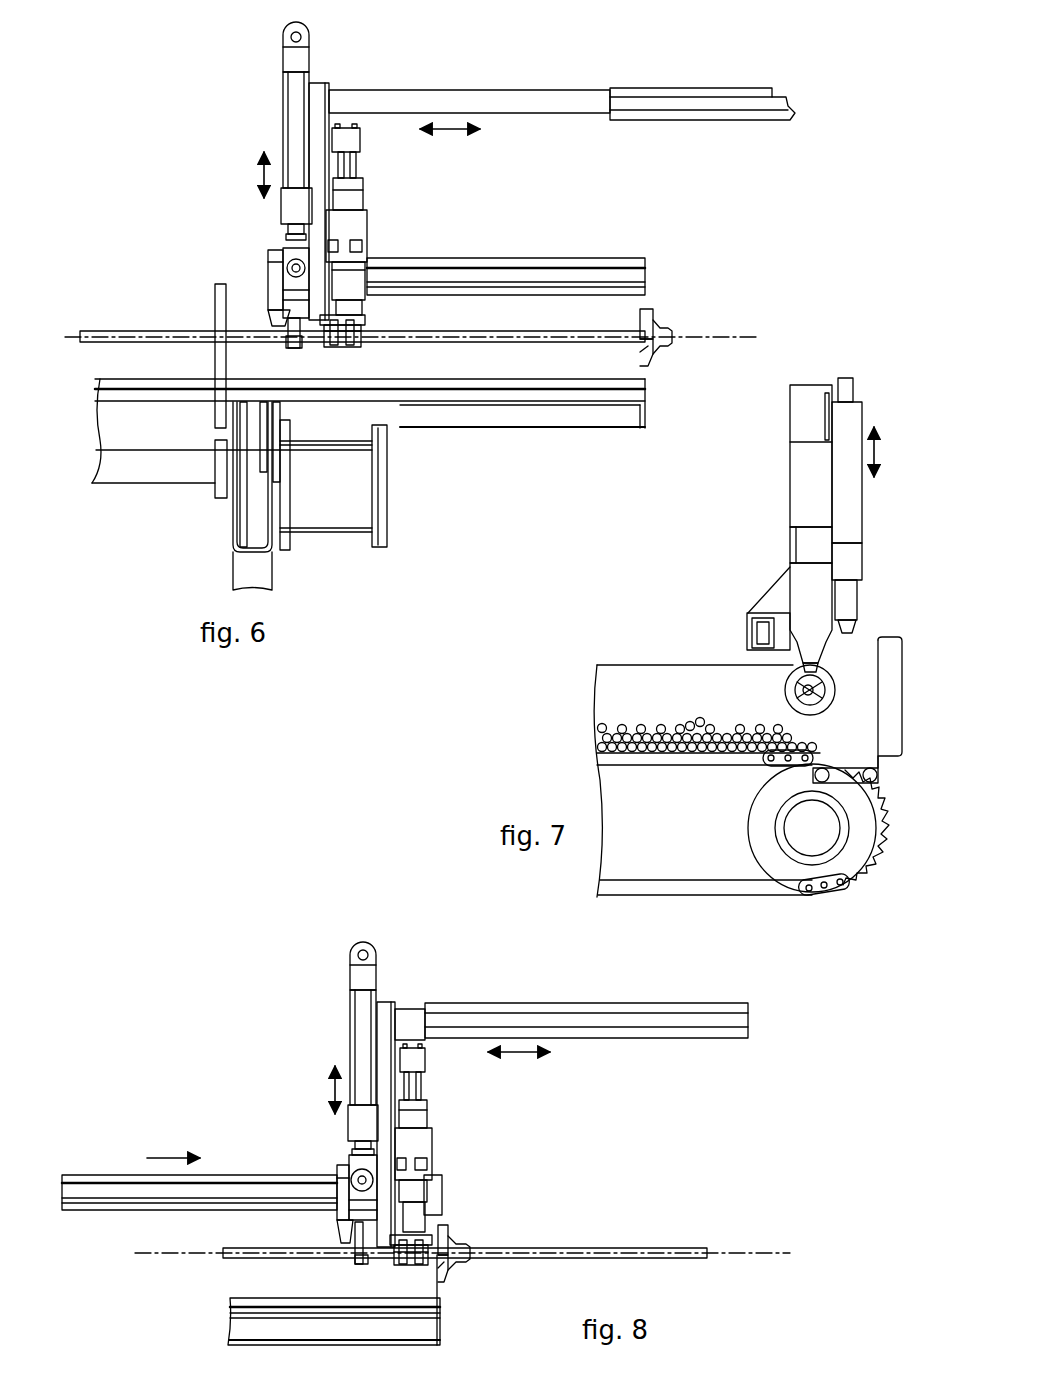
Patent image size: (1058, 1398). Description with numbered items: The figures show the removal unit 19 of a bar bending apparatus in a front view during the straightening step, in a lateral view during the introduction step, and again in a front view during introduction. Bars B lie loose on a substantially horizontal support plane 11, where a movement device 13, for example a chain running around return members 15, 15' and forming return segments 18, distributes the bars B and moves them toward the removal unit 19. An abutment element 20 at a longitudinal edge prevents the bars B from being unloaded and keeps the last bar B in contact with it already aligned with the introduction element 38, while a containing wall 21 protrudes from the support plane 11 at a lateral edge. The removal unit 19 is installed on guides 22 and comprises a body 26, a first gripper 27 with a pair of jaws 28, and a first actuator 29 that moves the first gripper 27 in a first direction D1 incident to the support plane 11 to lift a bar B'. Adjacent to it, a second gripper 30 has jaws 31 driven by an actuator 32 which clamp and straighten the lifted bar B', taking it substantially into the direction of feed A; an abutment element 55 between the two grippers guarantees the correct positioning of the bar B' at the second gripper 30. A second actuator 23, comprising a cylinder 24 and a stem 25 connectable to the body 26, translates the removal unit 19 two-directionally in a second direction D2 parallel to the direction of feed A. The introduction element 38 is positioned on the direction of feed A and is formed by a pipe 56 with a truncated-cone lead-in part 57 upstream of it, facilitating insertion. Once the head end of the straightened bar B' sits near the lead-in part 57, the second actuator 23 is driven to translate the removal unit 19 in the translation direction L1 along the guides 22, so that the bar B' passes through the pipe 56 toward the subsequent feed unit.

In FIG. 6, the support plane 11 is at (156, 416).
In FIG. 6, the movement device 13 is at (280, 535).
In FIG. 6, the return member 15 is at (227, 479).
In FIG. 7, the return member 15' is at (838, 828).
In FIG. 7, the return segment 18 is at (620, 765).
In FIG. 6, the removal unit 19 is at (276, 62).
In FIG. 7, the removal unit 19 is at (878, 418).
In FIG. 8, the removal unit 19 is at (347, 931).
In FIG. 6, the abutment element 20 is at (220, 292).
In FIG. 7, the abutment element 20 is at (890, 720).
In FIG. 6, the containing wall 21 is at (645, 418).
In FIG. 8, the containing wall 21 is at (441, 1330).
In FIG. 6, the guides 22 is at (553, 275).
In FIG. 8, the guides 22 is at (264, 1182).
In FIG. 6, the second actuator 23 is at (605, 70).
In FIG. 8, the second actuator 23 is at (494, 1000).
In FIG. 6, the cylinder 24 is at (710, 103).
In FIG. 8, the cylinder 24 is at (677, 1020).
In FIG. 6, the stem 25 is at (385, 102).
In FIG. 8, the stem 25 is at (411, 1020).
In FIG. 6, the body 26 is at (318, 93).
In FIG. 8, the body 26 is at (385, 1010).
In FIG. 6, the first gripper 27 is at (262, 283).
In FIG. 7, the first gripper 27 is at (830, 662).
In FIG. 8, the first gripper 27 is at (335, 1218).
In FIG. 6, the jaws 28 is at (275, 318).
In FIG. 7, the jaws 28 is at (803, 658).
In FIG. 8, the jaws 28 is at (346, 1236).
In FIG. 6, the first actuator 29 is at (297, 136).
In FIG. 7, the first actuator 29 is at (843, 482).
In FIG. 8, the first actuator 29 is at (362, 1052).
In FIG. 6, the second gripper 30 is at (376, 346).
In FIG. 7, the second gripper 30 is at (774, 679).
In FIG. 8, the second gripper 30 is at (389, 1272).
In FIG. 6, the jaws 31 is at (348, 323).
In FIG. 7, the jaws 31 is at (800, 690).
In FIG. 8, the jaws 31 is at (428, 1265).
In FIG. 6, the actuator 32 is at (347, 140).
In FIG. 8, the actuator 32 is at (410, 1055).
In FIG. 6, the introduction element 38 is at (672, 318).
In FIG. 7, the introduction element 38 is at (876, 779).
In FIG. 8, the introduction element 38 is at (471, 1246).
In FIG. 6, the abutment element 55 is at (295, 346).
In FIG. 8, the abutment element 55 is at (361, 1266).
In FIG. 6, the pipe 56 is at (662, 350).
In FIG. 7, the pipe 56 is at (801, 706).
In FIG. 8, the pipe 56 is at (457, 1263).
In FIG. 6, the lead-in part 57 is at (648, 316).
In FIG. 7, the lead-in part 57 is at (830, 692).
In FIG. 8, the lead-in part 57 is at (444, 1236).
In FIG. 6, the direction of feed A is at (727, 337).
In FIG. 8, the direction of feed A is at (755, 1253).
In FIG. 6, the bars B is at (121, 367).
In FIG. 7, the bars B is at (756, 735).
In FIG. 8, the bars B is at (238, 1285).
In FIG. 6, the bar B' is at (362, 336).
In FIG. 7, the bar B' is at (747, 785).
In FIG. 8, the bar B' is at (465, 1229).
In FIG. 6, the first direction D1 is at (261, 175).
In FIG. 7, the first direction D1 is at (876, 451).
In FIG. 8, the first direction D1 is at (332, 1090).
In FIG. 6, the second direction D2 is at (448, 129).
In FIG. 8, the second direction D2 is at (517, 1053).
In FIG. 8, the translation direction L1 is at (158, 1158).